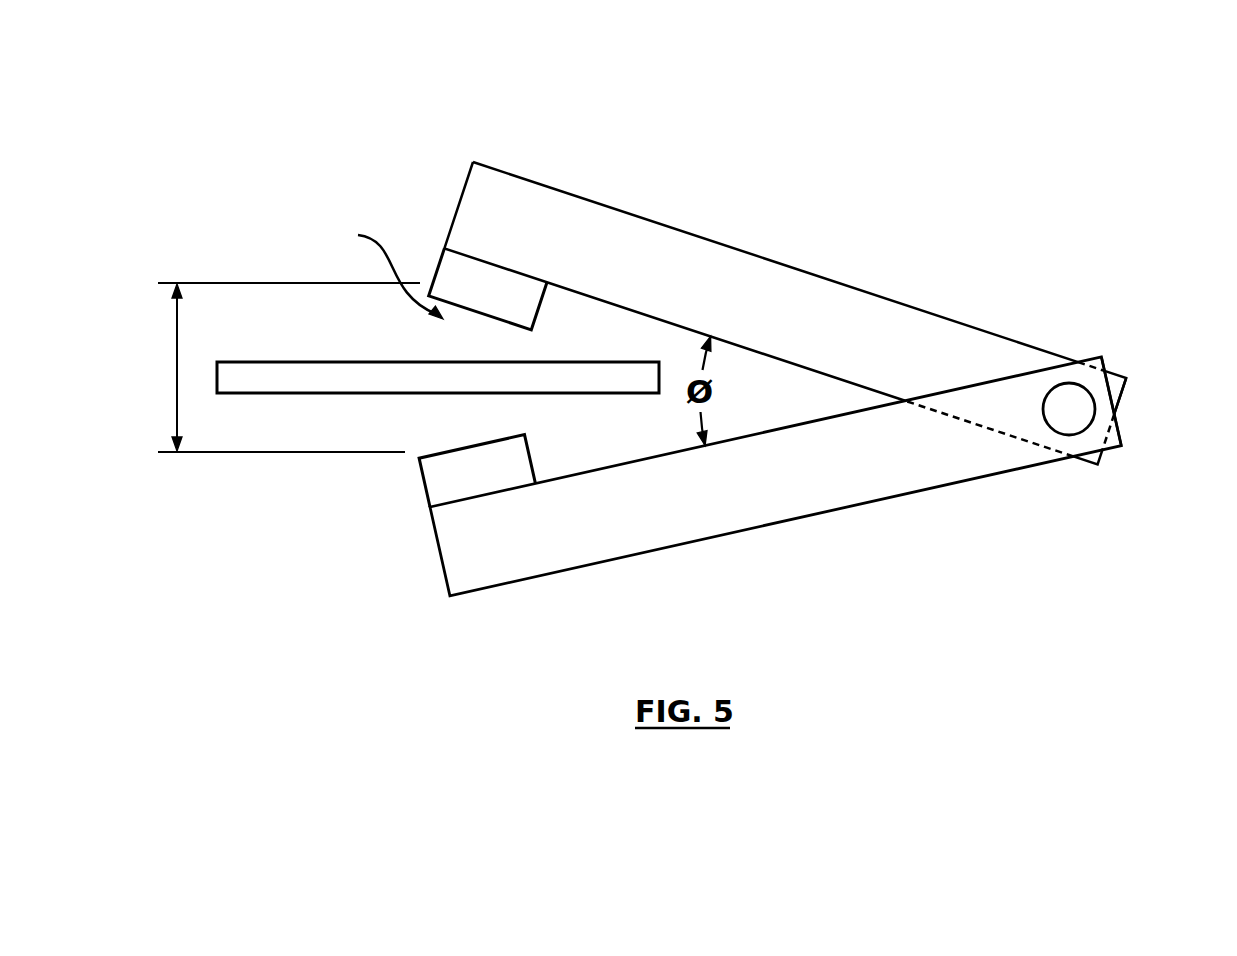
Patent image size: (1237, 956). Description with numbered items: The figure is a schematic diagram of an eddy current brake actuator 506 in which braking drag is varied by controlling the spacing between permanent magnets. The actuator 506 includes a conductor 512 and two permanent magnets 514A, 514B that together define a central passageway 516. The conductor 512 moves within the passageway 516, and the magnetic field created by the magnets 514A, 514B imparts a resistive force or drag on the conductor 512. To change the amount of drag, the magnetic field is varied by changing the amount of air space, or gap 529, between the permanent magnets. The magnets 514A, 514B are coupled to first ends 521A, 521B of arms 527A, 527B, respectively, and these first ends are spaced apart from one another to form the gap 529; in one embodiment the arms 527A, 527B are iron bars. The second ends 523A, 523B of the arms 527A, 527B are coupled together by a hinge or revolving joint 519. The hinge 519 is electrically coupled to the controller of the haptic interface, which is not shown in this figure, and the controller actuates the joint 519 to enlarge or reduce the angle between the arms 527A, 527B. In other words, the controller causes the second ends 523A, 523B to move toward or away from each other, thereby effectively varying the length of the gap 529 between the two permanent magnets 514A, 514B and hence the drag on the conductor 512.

The eddy current brake actuator 506 is at (420, 122).
The conductor 512 is at (307, 368).
The permanent magnet 514A is at (457, 262).
The permanent magnet 514B is at (437, 473).
The central passageway 516 is at (376, 269).
The hinge or revolving joint 519 is at (1067, 418).
The first end of arm 521A is at (477, 207).
The first end of arm 521B is at (455, 540).
The second end of arm 523A is at (1115, 388).
The second end of arm 523B is at (1123, 422).
The arm 527A is at (792, 283).
The arm 527B is at (792, 500).
The gap 529 is at (287, 367).